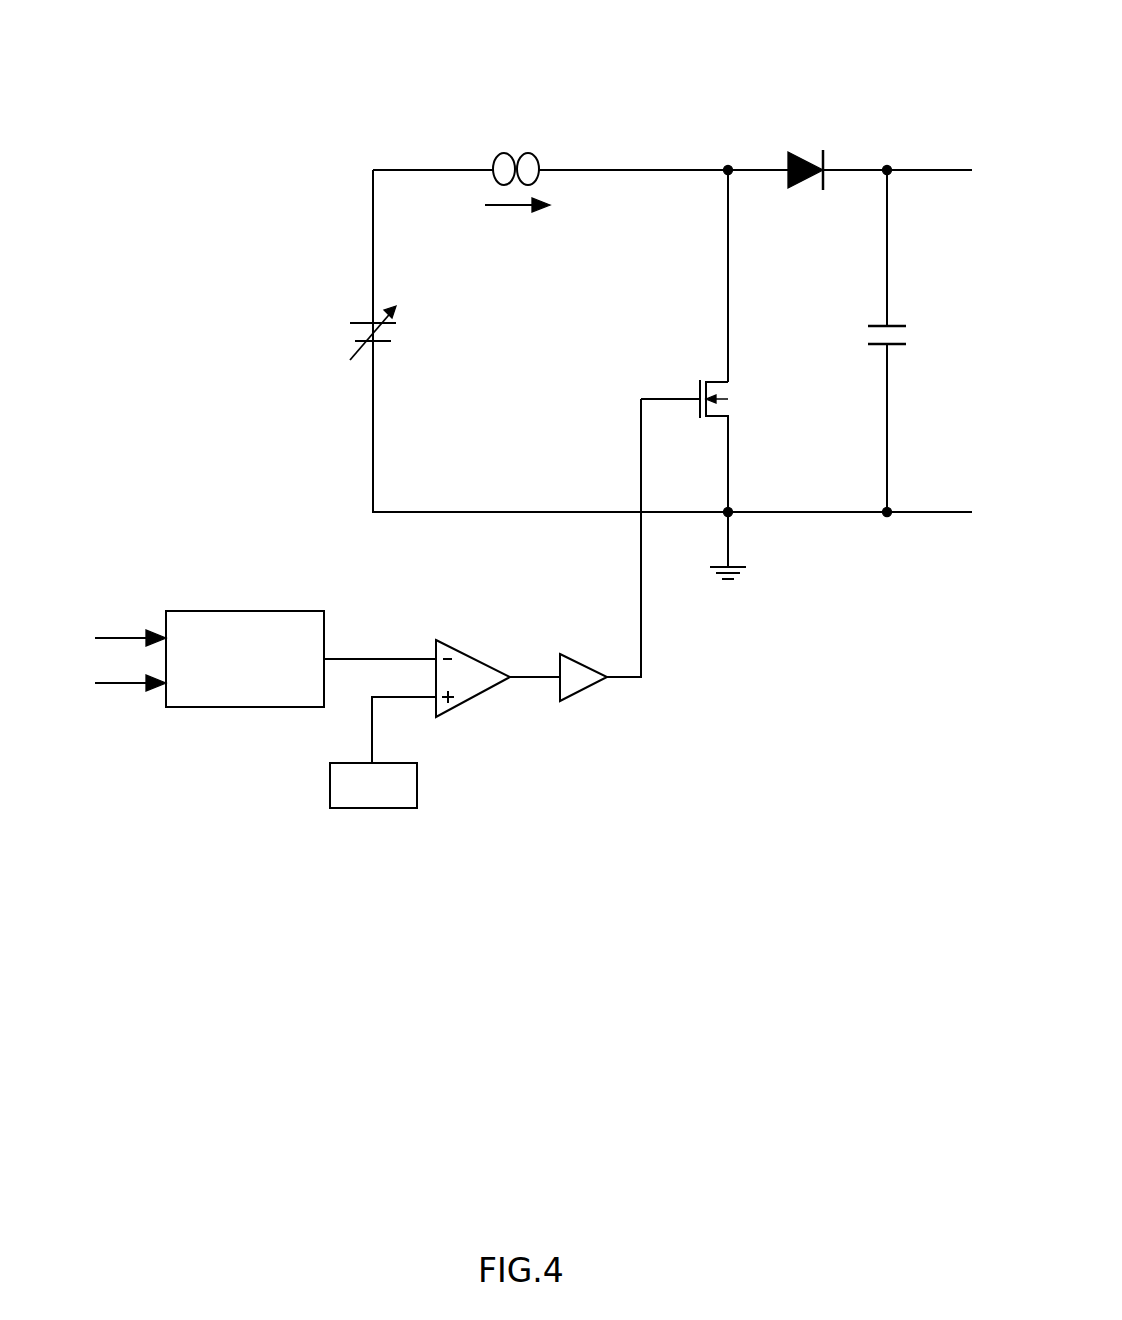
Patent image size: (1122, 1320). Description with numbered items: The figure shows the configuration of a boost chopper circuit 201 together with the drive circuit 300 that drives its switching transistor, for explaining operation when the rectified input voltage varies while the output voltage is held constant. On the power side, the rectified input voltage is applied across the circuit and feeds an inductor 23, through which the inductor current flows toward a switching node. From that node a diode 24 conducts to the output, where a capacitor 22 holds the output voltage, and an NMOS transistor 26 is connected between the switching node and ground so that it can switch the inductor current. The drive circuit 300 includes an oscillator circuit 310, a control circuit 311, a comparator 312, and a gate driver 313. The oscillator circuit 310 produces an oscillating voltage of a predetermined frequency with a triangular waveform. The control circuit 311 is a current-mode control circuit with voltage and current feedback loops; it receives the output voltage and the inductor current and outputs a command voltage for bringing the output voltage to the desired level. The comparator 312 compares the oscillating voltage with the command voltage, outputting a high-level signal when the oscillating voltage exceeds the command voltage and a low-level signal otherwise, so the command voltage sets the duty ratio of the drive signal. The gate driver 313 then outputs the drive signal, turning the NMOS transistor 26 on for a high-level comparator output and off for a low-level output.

The boost chopper circuit 201 is at (733, 98).
The capacitor 22 is at (900, 326).
The inductor 23 is at (540, 162).
The diode 24 is at (808, 158).
The NMOS transistor 26 is at (705, 420).
The drive circuit 300 is at (264, 530).
The oscillator circuit 310 is at (418, 782).
The control circuit 311 is at (176, 610).
The comparator 312 is at (452, 642).
The gate driver 313 is at (576, 657).